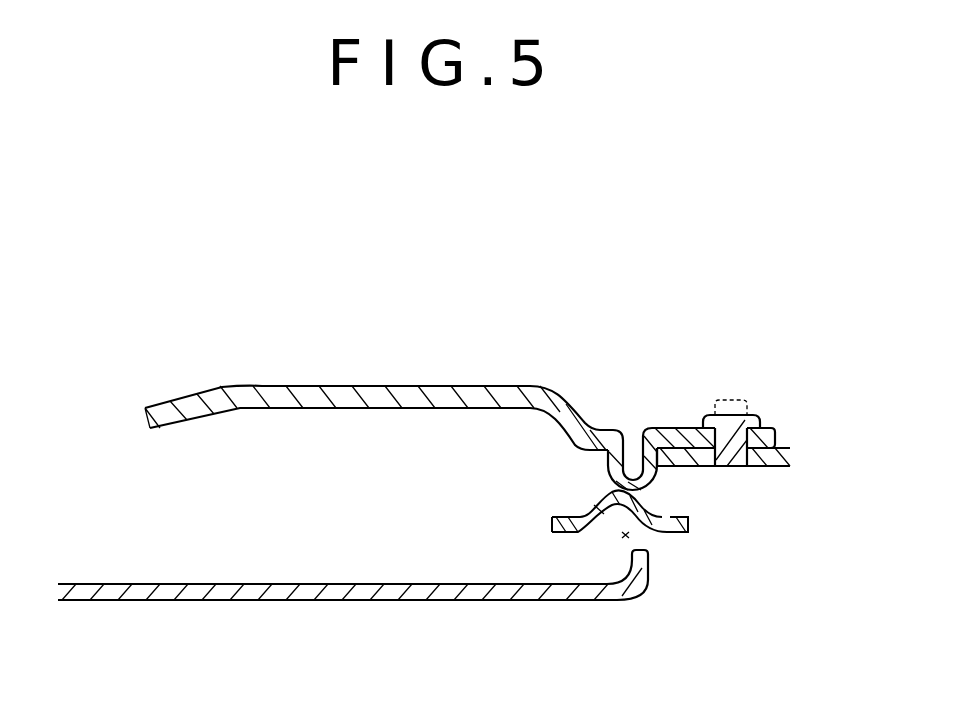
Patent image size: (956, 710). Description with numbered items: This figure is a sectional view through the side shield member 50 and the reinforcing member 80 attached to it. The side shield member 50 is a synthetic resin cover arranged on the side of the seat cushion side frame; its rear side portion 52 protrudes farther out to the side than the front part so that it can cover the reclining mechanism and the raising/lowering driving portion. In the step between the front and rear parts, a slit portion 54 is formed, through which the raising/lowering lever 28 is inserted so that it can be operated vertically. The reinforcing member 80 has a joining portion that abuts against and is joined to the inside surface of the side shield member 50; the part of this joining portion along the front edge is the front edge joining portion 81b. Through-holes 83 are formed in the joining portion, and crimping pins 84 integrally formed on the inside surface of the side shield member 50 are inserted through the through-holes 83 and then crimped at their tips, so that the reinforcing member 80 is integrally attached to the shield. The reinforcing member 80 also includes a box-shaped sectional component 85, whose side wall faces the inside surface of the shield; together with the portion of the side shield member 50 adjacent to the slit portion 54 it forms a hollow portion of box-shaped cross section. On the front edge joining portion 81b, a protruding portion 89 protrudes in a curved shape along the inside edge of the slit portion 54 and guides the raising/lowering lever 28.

The reinforcing member 80 is at (296, 382).
The box-shaped sectional component 85 is at (393, 385).
The protruding portion 89 is at (610, 464).
The front edge joining portion 81b is at (672, 437).
The crimping pin 84 is at (741, 410).
The through-hole 83 is at (738, 448).
The raising/lowering lever 28 is at (582, 527).
The slit portion 54 is at (629, 535).
The side shield member 50 is at (369, 604).
The rear side portion 52 is at (270, 598).